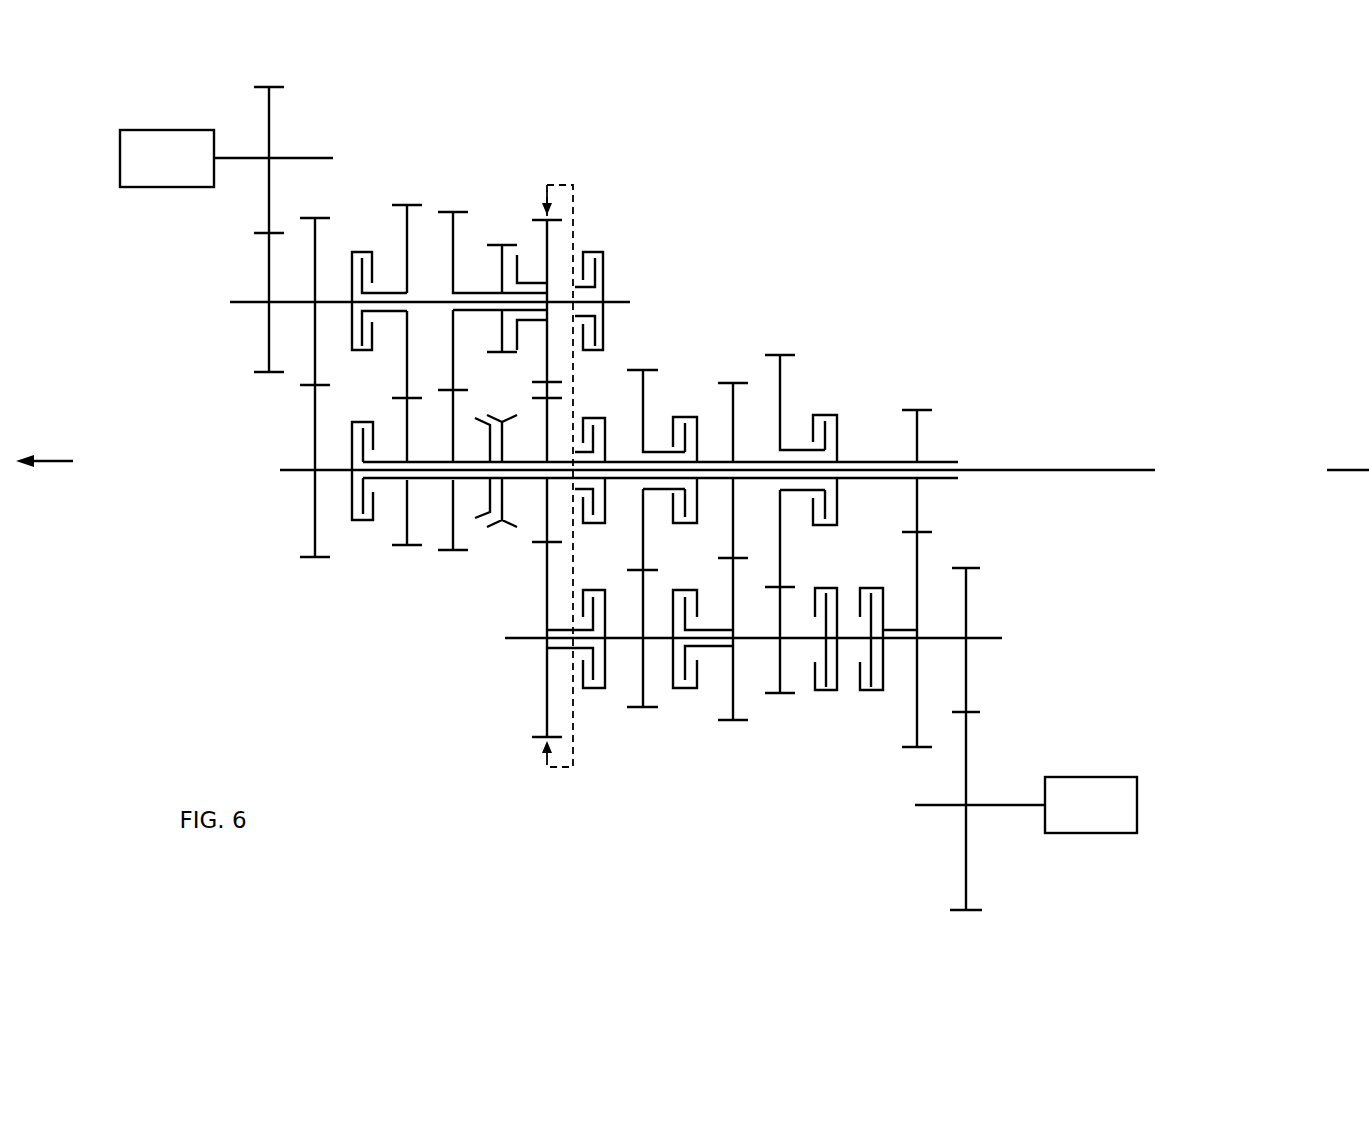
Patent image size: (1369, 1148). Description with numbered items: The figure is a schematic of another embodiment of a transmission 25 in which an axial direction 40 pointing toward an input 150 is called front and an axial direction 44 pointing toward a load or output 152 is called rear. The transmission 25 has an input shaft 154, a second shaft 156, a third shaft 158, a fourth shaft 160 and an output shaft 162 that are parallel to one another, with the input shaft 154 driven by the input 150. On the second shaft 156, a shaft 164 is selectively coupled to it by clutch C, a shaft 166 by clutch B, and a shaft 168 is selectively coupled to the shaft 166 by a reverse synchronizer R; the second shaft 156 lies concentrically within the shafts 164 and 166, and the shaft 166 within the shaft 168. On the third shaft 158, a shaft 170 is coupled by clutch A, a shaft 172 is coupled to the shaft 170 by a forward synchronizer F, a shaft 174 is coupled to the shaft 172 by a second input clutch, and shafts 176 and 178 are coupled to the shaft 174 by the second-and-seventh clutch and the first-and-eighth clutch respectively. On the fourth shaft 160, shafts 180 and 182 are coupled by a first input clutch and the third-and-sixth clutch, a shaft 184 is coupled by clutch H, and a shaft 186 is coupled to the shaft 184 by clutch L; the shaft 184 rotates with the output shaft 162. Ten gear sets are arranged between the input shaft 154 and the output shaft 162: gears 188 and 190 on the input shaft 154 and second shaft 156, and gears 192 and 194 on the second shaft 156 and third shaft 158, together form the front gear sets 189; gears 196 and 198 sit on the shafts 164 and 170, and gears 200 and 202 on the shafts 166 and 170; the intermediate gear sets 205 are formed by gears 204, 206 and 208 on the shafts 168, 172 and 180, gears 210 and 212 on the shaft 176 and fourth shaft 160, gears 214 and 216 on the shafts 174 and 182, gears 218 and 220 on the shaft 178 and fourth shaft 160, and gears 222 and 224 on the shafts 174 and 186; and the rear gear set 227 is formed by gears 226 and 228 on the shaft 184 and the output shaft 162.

The transmission 25 is at (74, 149).
The axial direction 40 is at (48, 461).
The axial direction 44 is at (1351, 469).
The input 150 is at (168, 128).
The load or output 152 is at (1090, 777).
The input shaft 154 is at (240, 157).
The second shaft 156 is at (252, 300).
The third shaft 158 is at (297, 465).
The fourth shaft 160 is at (528, 645).
The output shaft 162 is at (943, 807).
The shaft 164 is at (385, 292).
The shaft 166 is at (487, 290).
The shaft 168 is at (545, 283).
The shaft 170 is at (385, 483).
The shaft 172 is at (545, 520).
The shaft 174 is at (633, 460).
The shaft 176 is at (650, 405).
The shaft 178 is at (788, 442).
The shaft 180 is at (560, 650).
The shaft 182 is at (727, 688).
The shaft 184 is at (987, 642).
The shaft 186 is at (883, 694).
The gear 188 is at (270, 122).
The front gear sets 189 is at (247, 392).
The gear 190 is at (268, 333).
The gear 192 is at (313, 262).
The gear 194 is at (313, 510).
The gear 196 is at (402, 247).
The gear 198 is at (407, 515).
The gear 200 is at (447, 250).
The gear 202 is at (450, 513).
The gear 204 is at (550, 250).
The intermediate gear sets 205 is at (547, 797).
The gear 206 is at (518, 482).
The gear 208 is at (543, 693).
The gear 210 is at (648, 400).
The gear 212 is at (642, 670).
The gear 214 is at (740, 378).
The gear 216 is at (720, 652).
The gear 218 is at (783, 380).
The gear 220 is at (782, 725).
The gear 222 is at (917, 437).
The gear 224 is at (903, 648).
The gear 226 is at (967, 607).
The rear gear set 227 is at (993, 923).
The gear 228 is at (963, 867).